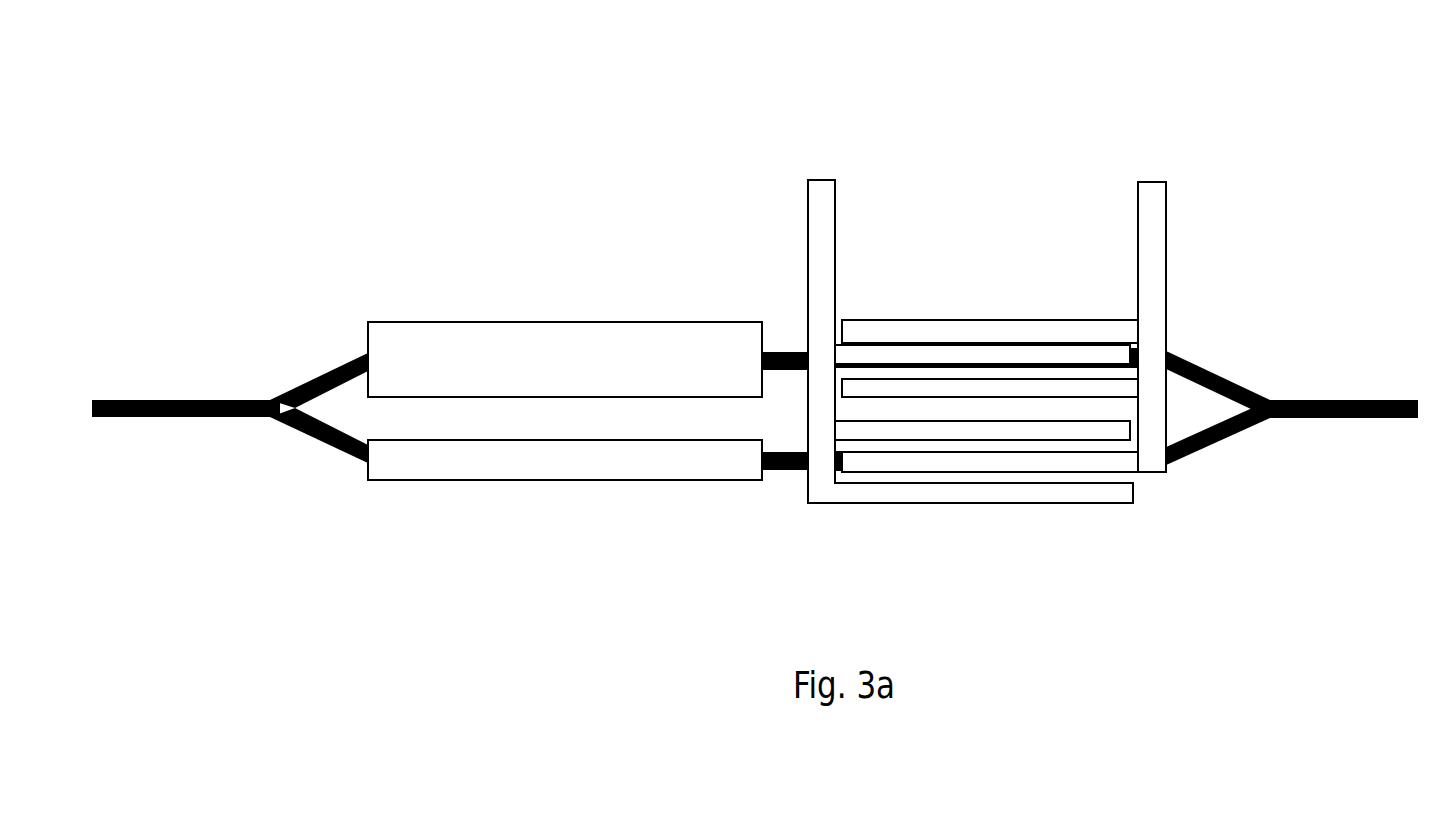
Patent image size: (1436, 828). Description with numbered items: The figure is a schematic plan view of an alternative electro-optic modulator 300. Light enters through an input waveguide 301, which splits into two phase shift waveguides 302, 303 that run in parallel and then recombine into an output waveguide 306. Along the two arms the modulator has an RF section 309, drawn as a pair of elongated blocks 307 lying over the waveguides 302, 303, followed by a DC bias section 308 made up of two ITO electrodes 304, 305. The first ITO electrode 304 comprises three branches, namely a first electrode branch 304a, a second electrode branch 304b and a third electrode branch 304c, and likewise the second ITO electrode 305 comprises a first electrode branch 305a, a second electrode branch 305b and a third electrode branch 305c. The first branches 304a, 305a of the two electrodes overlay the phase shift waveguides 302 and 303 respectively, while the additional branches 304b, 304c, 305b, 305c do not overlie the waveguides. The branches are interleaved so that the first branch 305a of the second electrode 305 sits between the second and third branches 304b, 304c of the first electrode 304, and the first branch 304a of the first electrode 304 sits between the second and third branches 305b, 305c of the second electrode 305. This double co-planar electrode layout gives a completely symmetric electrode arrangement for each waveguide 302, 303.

The modulator 300 is at (524, 175).
The input waveguide 301 is at (203, 400).
The phase shift waveguide 302 is at (333, 367).
The phase shift waveguide 303 is at (318, 444).
The first ITO electrode 304 is at (836, 205).
The first electrode branch 304a is at (1002, 345).
The second electrode branch 304b is at (982, 504).
The third electrode branch 304c is at (875, 441).
The second ITO electrode 305 is at (1168, 215).
The first electrode branch 305a is at (1130, 474).
The second electrode branch 305b is at (1078, 380).
The third electrode branch 305c is at (896, 323).
The output waveguide 306 is at (1366, 420).
The phase shifter sections 307 is at (640, 322).
The DC bias section 308 is at (993, 142).
The RF section 309 is at (438, 302).